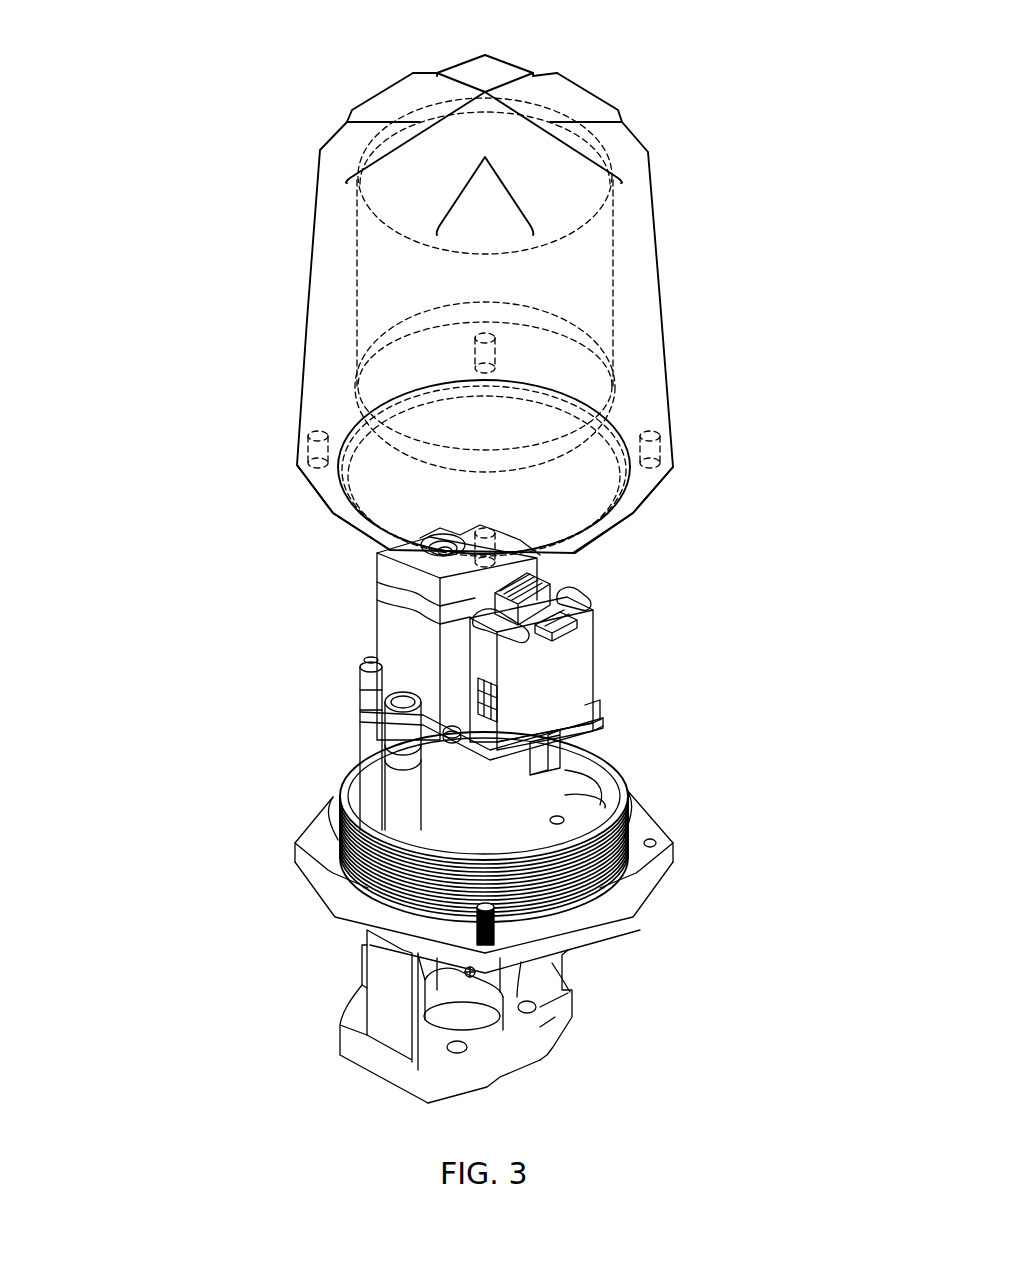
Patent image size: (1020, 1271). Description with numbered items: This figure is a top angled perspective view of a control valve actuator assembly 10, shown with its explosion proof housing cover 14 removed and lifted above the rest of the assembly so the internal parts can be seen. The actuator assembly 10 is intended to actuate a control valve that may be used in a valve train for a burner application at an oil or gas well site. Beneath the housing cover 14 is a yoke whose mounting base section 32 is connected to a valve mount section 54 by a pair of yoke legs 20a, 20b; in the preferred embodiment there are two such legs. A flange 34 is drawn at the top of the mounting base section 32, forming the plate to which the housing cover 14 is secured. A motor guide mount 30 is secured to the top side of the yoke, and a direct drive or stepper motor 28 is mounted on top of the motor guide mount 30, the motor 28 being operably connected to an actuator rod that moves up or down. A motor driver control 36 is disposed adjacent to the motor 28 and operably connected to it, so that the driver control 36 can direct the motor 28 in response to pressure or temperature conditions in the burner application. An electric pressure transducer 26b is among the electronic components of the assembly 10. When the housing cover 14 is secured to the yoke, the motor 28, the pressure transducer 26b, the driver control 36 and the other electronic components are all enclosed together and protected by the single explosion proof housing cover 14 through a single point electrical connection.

The control valve actuator assembly 10 is at (208, 398).
The explosion proof housing cover 14 is at (659, 293).
The yoke leg 20a is at (563, 970).
The yoke leg 20b is at (392, 990).
The electric pressure transducer 26b is at (397, 780).
The stepper motor 28 is at (400, 642).
The motor guide mount 30 is at (368, 718).
The mounting base section 32 is at (592, 797).
The flange 34 is at (627, 827).
The motor driver control 36 is at (583, 665).
The valve mount section 54 is at (540, 1050).